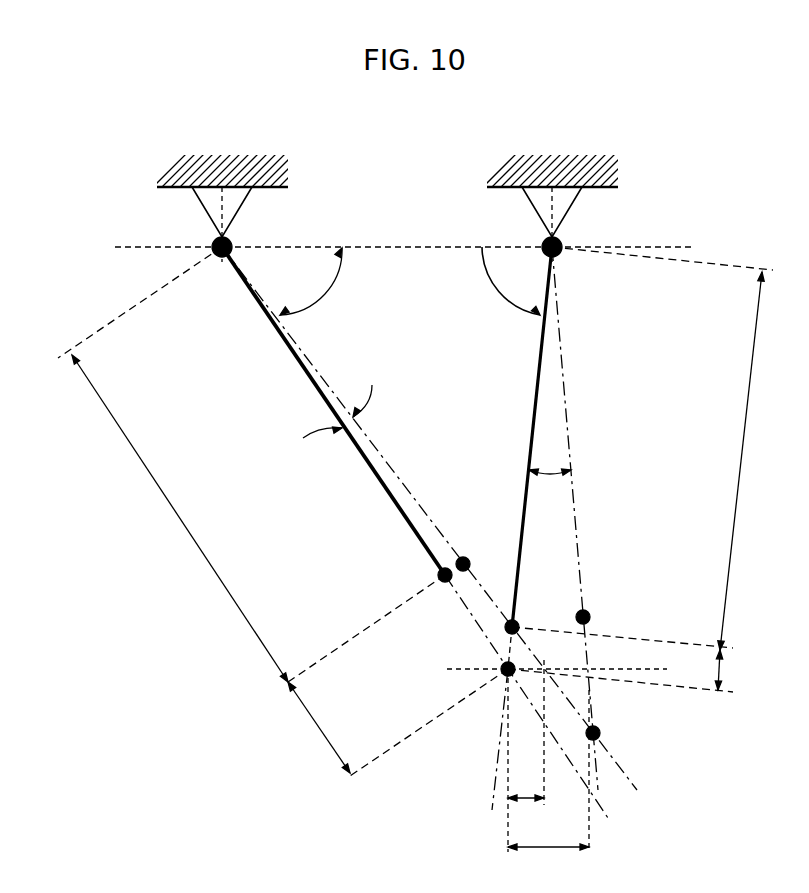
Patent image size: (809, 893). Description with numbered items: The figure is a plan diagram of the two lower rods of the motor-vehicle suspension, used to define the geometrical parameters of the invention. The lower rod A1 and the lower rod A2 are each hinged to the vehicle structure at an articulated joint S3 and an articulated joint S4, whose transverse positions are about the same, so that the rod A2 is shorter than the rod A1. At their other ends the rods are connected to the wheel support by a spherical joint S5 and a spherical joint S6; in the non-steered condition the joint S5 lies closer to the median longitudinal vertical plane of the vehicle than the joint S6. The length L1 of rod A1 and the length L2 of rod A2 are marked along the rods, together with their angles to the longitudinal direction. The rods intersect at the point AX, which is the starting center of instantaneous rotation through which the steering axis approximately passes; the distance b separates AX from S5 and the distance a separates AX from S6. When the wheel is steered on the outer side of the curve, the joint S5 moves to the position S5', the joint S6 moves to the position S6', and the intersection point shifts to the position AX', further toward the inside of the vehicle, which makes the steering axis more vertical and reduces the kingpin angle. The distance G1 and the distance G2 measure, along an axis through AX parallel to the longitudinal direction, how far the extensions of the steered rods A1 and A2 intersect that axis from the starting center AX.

The articulated joint S3 is at (215, 258).
The articulated joint S4 is at (560, 256).
The spherical joint S5 is at (427, 576).
The steered position of joint S5 S5' is at (477, 553).
The spherical joint S6 is at (526, 616).
The steered position of joint S6 S6' is at (601, 610).
The intersection point AX is at (488, 661).
The shifted intersection point AX' is at (611, 733).
The lower rod A1 is at (402, 513).
The lower rod A2 is at (535, 385).
The length of rod A1 L1 is at (180, 518).
The length of rod A2 L2 is at (746, 461).
The distance G1 is at (526, 787).
The distance G2 is at (548, 835).
The distance a is at (728, 670).
The distance b is at (319, 727).